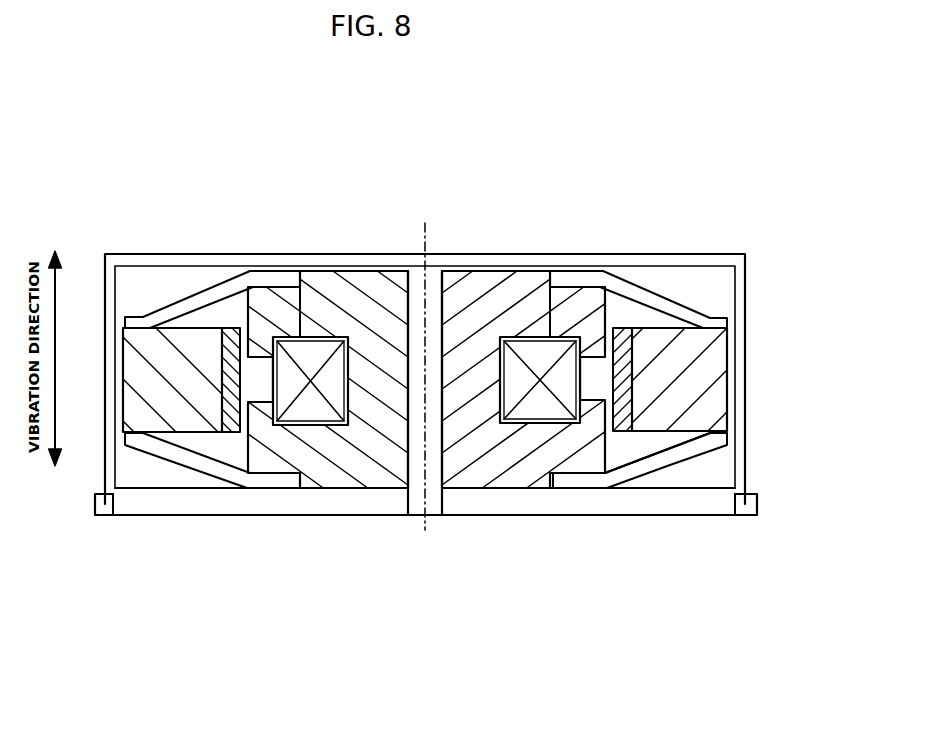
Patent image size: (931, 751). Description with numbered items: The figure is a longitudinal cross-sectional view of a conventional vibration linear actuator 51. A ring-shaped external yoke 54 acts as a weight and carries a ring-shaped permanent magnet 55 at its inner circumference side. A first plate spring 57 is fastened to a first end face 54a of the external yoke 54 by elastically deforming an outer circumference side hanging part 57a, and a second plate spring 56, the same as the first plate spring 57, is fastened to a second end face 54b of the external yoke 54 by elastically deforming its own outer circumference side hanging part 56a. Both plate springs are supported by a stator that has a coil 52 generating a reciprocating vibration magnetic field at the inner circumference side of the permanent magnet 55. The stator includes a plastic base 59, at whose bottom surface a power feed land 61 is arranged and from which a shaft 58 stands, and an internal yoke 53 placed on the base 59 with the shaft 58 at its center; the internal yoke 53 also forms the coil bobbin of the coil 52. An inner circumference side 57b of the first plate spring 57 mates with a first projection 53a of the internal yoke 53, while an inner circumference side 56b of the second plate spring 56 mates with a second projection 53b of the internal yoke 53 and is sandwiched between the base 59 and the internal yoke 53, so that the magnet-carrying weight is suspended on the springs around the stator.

The vibration linear actuator 51 is at (494, 230).
The coil 52 is at (542, 350).
The internal yoke 53 is at (365, 292).
The first projection 53a is at (549, 280).
The second projection 53b is at (312, 481).
The external yoke 54 is at (708, 330).
The first end face 54a is at (655, 325).
The second end face 54b is at (672, 437).
The permanent magnet 55 is at (223, 337).
The second plate spring 56 is at (632, 467).
The outer circumference side hanging part 56a is at (715, 440).
The inner circumference side 56b is at (592, 478).
The first plate spring 57 is at (240, 280).
The outer circumference side hanging part 57a is at (705, 337).
The inner circumference side 57b is at (287, 283).
The shaft 58 is at (432, 292).
The base 59 is at (483, 503).
The power feed land 61 is at (240, 516).